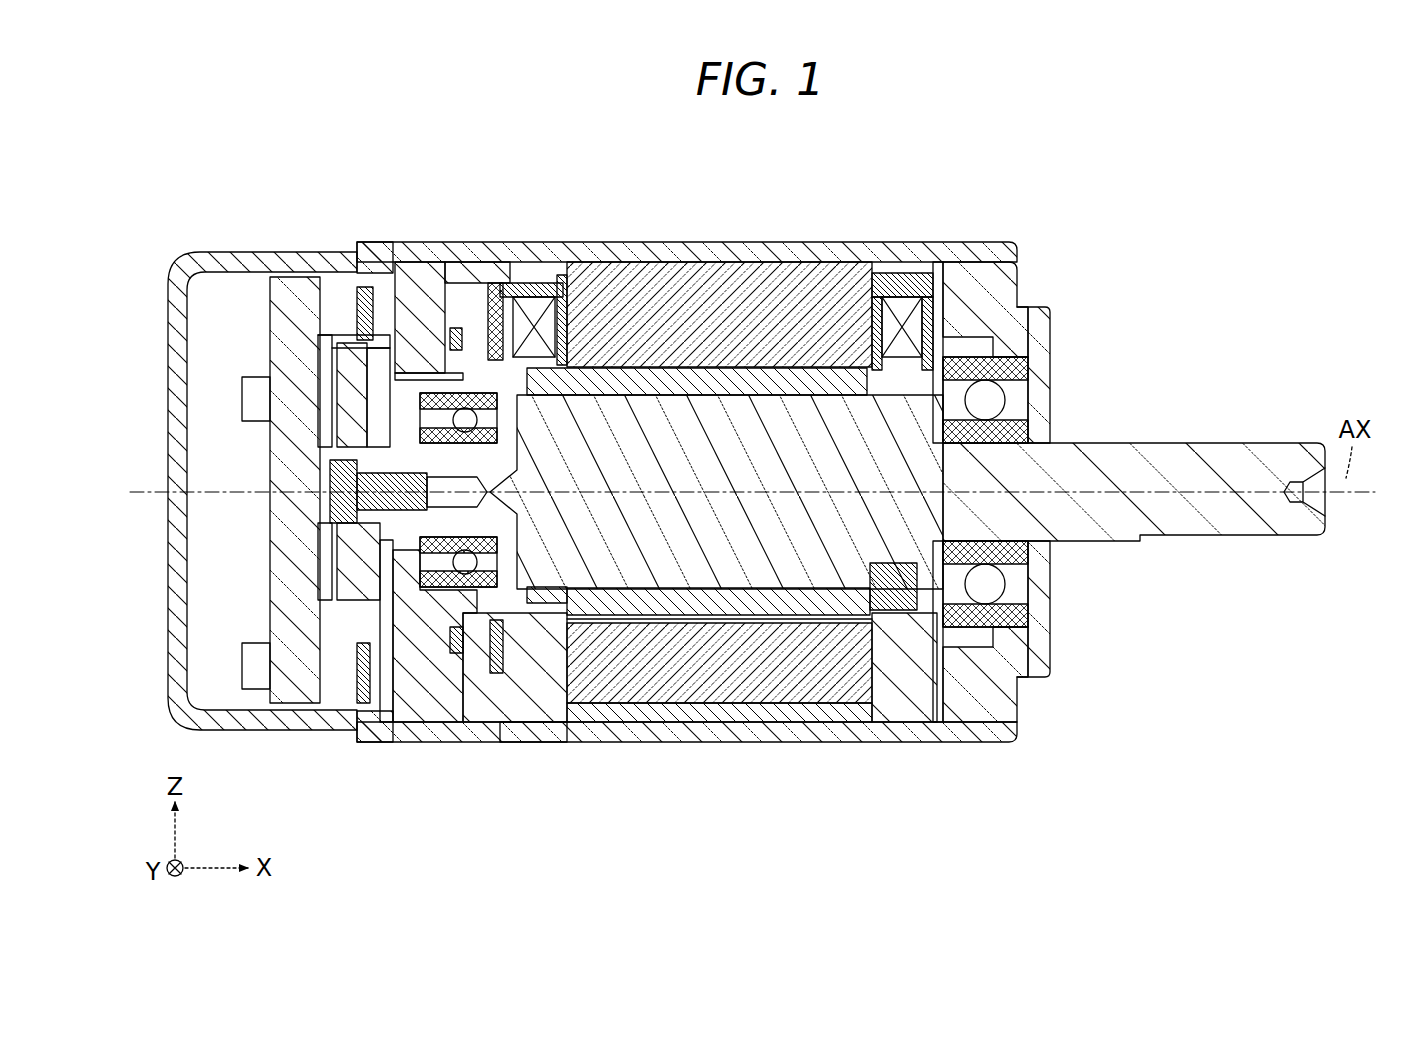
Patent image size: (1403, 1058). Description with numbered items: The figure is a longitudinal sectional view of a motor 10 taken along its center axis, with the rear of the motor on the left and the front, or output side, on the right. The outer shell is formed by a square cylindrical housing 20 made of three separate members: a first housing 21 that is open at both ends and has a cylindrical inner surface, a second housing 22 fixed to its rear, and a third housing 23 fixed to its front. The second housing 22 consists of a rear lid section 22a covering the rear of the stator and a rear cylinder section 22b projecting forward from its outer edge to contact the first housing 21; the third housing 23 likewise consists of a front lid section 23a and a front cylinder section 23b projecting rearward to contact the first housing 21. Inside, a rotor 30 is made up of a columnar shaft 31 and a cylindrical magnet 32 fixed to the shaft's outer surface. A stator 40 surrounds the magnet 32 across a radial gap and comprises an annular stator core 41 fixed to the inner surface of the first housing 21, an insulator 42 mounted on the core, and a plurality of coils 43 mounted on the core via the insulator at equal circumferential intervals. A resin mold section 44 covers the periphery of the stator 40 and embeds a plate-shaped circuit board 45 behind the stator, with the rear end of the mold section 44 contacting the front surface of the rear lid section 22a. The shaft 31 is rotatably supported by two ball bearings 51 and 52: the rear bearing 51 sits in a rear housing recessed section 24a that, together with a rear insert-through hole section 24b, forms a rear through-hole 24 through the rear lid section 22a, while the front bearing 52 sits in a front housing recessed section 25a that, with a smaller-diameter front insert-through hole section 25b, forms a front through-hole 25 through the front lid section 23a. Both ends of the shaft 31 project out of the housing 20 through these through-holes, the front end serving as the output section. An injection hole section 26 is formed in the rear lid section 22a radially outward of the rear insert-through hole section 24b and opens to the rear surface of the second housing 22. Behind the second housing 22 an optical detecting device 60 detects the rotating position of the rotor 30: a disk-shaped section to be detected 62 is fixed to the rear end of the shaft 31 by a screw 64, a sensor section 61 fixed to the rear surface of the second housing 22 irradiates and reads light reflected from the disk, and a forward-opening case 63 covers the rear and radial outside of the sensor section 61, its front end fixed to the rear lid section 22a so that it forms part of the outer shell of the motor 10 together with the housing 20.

The motor 10 is at (726, 484).
The housing 20 is at (634, 484).
The first housing 21 is at (690, 248).
The second housing 22 is at (456, 425).
The rear lid section 22a is at (433, 262).
The rear cylinder section 22b is at (482, 262).
The third housing 23 is at (1024, 304).
The front lid section 23a is at (1005, 243).
The front cylinder section 23b is at (913, 247).
The rear through-hole 24 is at (449, 615).
The rear housing recessed section 24a is at (482, 742).
The rear insert-through hole section 24b is at (502, 796).
The front through-hole 25 is at (1036, 683).
The front housing recessed section 25a is at (1034, 700).
The front insert-through hole section 25b is at (1090, 690).
The injection hole section 26 is at (447, 385).
The rotor 30 is at (841, 586).
The shaft 31 is at (1140, 455).
The magnet 32 is at (795, 615).
The stator 40 is at (718, 444).
The stator core 41 is at (647, 268).
The insulator 42 is at (553, 292).
The coils 43 is at (534, 270).
The mold section 44 is at (542, 742).
The circuit board 45 is at (528, 690).
The bearing 51 is at (330, 412).
The bearing 52 is at (985, 400).
The detecting device 60 is at (260, 483).
The sensor section 61 is at (296, 277).
The section to be detected 62 is at (345, 620).
The case 63 is at (222, 730).
The screw 64 is at (330, 520).